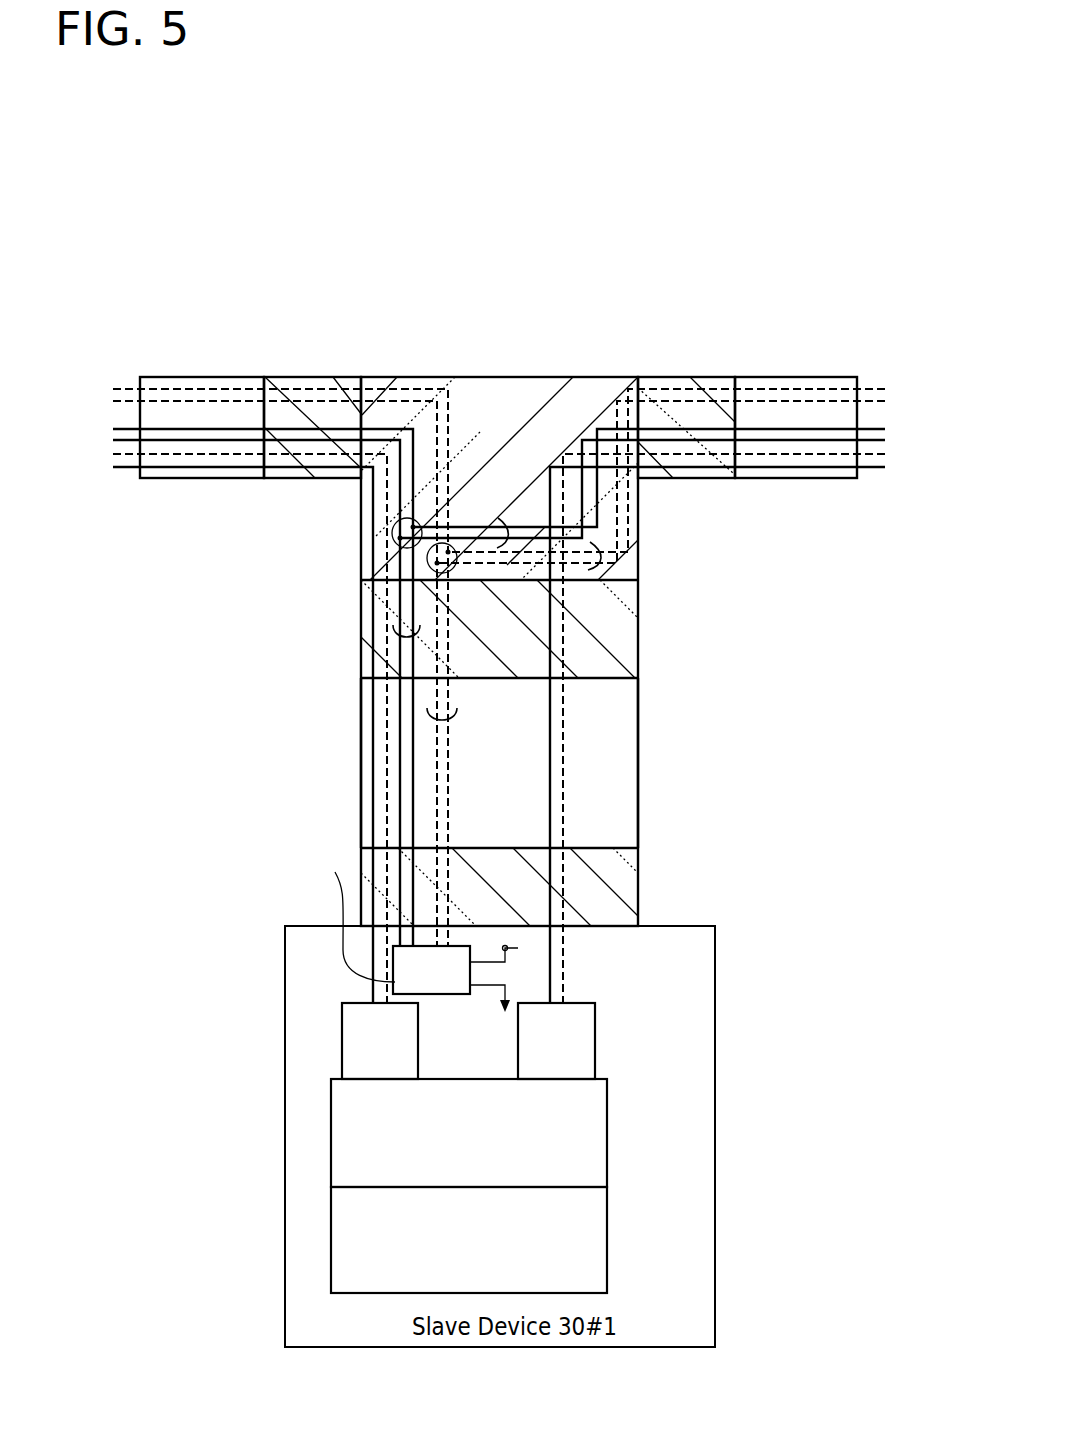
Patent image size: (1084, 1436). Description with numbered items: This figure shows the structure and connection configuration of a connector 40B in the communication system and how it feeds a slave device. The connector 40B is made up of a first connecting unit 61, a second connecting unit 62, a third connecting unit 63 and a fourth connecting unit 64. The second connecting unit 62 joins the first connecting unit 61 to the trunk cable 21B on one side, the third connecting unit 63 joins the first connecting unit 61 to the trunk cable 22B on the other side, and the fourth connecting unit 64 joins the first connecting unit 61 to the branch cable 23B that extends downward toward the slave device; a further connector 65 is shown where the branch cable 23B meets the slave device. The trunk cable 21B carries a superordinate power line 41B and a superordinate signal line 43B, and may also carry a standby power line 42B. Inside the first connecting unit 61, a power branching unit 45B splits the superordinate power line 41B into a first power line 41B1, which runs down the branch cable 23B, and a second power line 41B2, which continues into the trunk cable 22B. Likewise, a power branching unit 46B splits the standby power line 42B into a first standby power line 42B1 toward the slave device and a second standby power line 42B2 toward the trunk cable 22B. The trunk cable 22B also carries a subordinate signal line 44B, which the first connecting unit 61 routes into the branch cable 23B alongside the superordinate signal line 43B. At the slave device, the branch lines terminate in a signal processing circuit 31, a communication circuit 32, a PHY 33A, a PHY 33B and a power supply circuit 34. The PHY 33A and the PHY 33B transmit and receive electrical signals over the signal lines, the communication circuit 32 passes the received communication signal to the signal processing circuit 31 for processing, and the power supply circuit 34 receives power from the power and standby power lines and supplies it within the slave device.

The trunk cable 21B is at (183, 490).
The trunk cable 22B is at (815, 490).
The branch cable 23B is at (662, 747).
The connector 40B is at (325, 556).
The superordinate power line 41B is at (232, 681).
The first power line 41B1 is at (397, 640).
The second power line 41B2 is at (500, 518).
The standby power line 42B is at (250, 660).
The first standby power line 42B1 is at (428, 718).
The second standby power line 42B2 is at (602, 566).
The superordinate signal line 43B is at (219, 723).
The subordinate signal line 44B is at (748, 723).
The power branching unit 45B is at (395, 540).
The power branching unit 46B is at (455, 572).
The first connecting unit 61 is at (575, 350).
The second connecting unit 62 is at (297, 490).
The third connecting unit 63 is at (702, 490).
The fourth connecting unit 64 is at (662, 655).
The connector 65 is at (662, 885).
The signal processing circuit 31 is at (593, 1238).
The communication circuit 32 is at (593, 1132).
The PHY 33A is at (342, 1028).
The PHY 33B is at (597, 1040).
The power supply circuit 34 is at (453, 995).